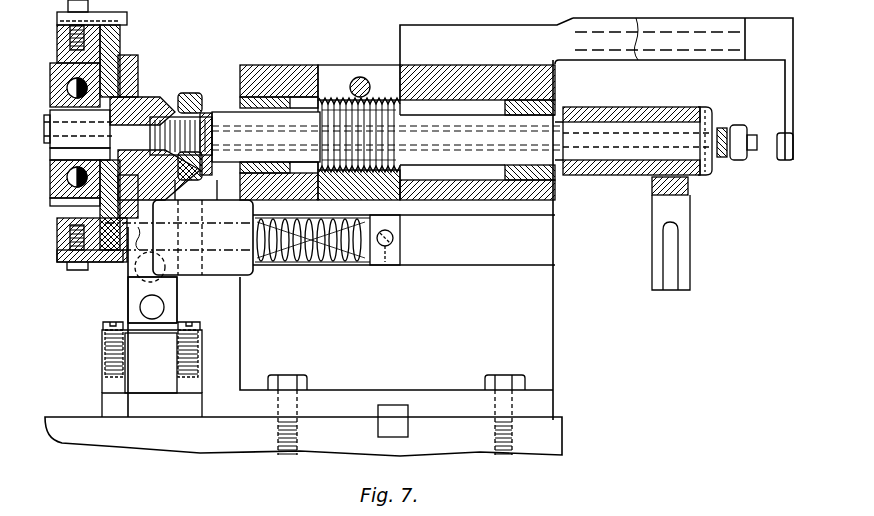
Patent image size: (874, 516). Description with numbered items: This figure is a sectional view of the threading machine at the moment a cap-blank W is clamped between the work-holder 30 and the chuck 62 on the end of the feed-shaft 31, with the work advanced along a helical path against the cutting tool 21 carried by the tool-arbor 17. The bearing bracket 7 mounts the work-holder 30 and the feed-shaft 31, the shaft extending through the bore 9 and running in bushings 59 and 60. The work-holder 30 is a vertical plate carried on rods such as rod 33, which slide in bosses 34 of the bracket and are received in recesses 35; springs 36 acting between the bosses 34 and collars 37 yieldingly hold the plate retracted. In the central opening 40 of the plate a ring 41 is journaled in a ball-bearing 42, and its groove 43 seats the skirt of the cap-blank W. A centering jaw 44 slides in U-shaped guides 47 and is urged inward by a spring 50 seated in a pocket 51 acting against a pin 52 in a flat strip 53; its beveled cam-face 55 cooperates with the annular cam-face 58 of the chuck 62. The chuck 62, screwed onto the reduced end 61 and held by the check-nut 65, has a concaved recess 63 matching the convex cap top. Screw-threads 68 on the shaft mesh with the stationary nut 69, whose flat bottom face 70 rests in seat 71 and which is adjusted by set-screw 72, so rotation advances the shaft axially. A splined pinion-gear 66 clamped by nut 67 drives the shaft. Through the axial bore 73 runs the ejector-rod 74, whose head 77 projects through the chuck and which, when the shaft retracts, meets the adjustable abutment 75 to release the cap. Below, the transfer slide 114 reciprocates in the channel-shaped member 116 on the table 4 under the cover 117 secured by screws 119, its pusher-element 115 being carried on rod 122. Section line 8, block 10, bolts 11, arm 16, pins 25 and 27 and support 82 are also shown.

The table 4 is at (552, 440).
The bearing bracket 7 is at (553, 318).
The section line 8 is at (35, 150).
The bore 9 is at (458, 103).
The block 10 is at (408, 418).
The bolts 11 is at (300, 380).
The arm 16 is at (757, 38).
The tool-arbor 17 is at (50, 158).
The cutting tool 21 is at (78, 129).
The pin 25 is at (135, 200).
The pin 27 is at (140, 228).
The work-holder 30 is at (57, 35).
The feed-shaft 31 is at (483, 160).
The rod 33 is at (298, 260).
The bosses 34 is at (185, 284).
The recesses 35 is at (540, 268).
The springs 36 is at (325, 261).
The collars 37 is at (390, 265).
The central opening 40 is at (110, 195).
The ring 41 is at (52, 176).
The ball-bearing 42 is at (52, 202).
The groove 43 is at (46, 122).
The centering jaw 44 is at (130, 90).
The U-shaped guides 47 is at (120, 62).
The springs 50 is at (85, 45).
The pockets 51 is at (118, 52).
The pins 52 is at (106, 12).
The flat strips 53 is at (60, 263).
The cam-face 55 is at (68, 9).
The annular cam-face 58 is at (52, 75).
The bushing 59 is at (545, 104).
The bushing 60 is at (268, 100).
The reduced end 61 is at (202, 104).
The chuck 62 is at (177, 181).
The concaved recess 63 is at (165, 166).
The check-nut 65 is at (205, 112).
The splined pinion-gear 66 is at (625, 115).
The nut 67 is at (705, 170).
The screw-threads 68 is at (372, 110).
The stationary nut 69 is at (400, 196).
The flat bottom face 70 is at (392, 204).
The seat 71 is at (340, 175).
The set-screw 72 is at (357, 78).
The axial bore 73 is at (588, 150).
The ejector-rod 74 is at (735, 158).
The adjustable abutment 75 is at (780, 140).
The head 77 is at (172, 116).
The cap-blank W is at (162, 82).
The support 82 is at (653, 214).
The transfer slide 114 is at (135, 378).
The pusher-element 115 is at (132, 300).
The channel-shaped member 116 is at (190, 388).
The cover 117 is at (152, 340).
The screws 119 is at (108, 352).
The rod 122 is at (160, 308).